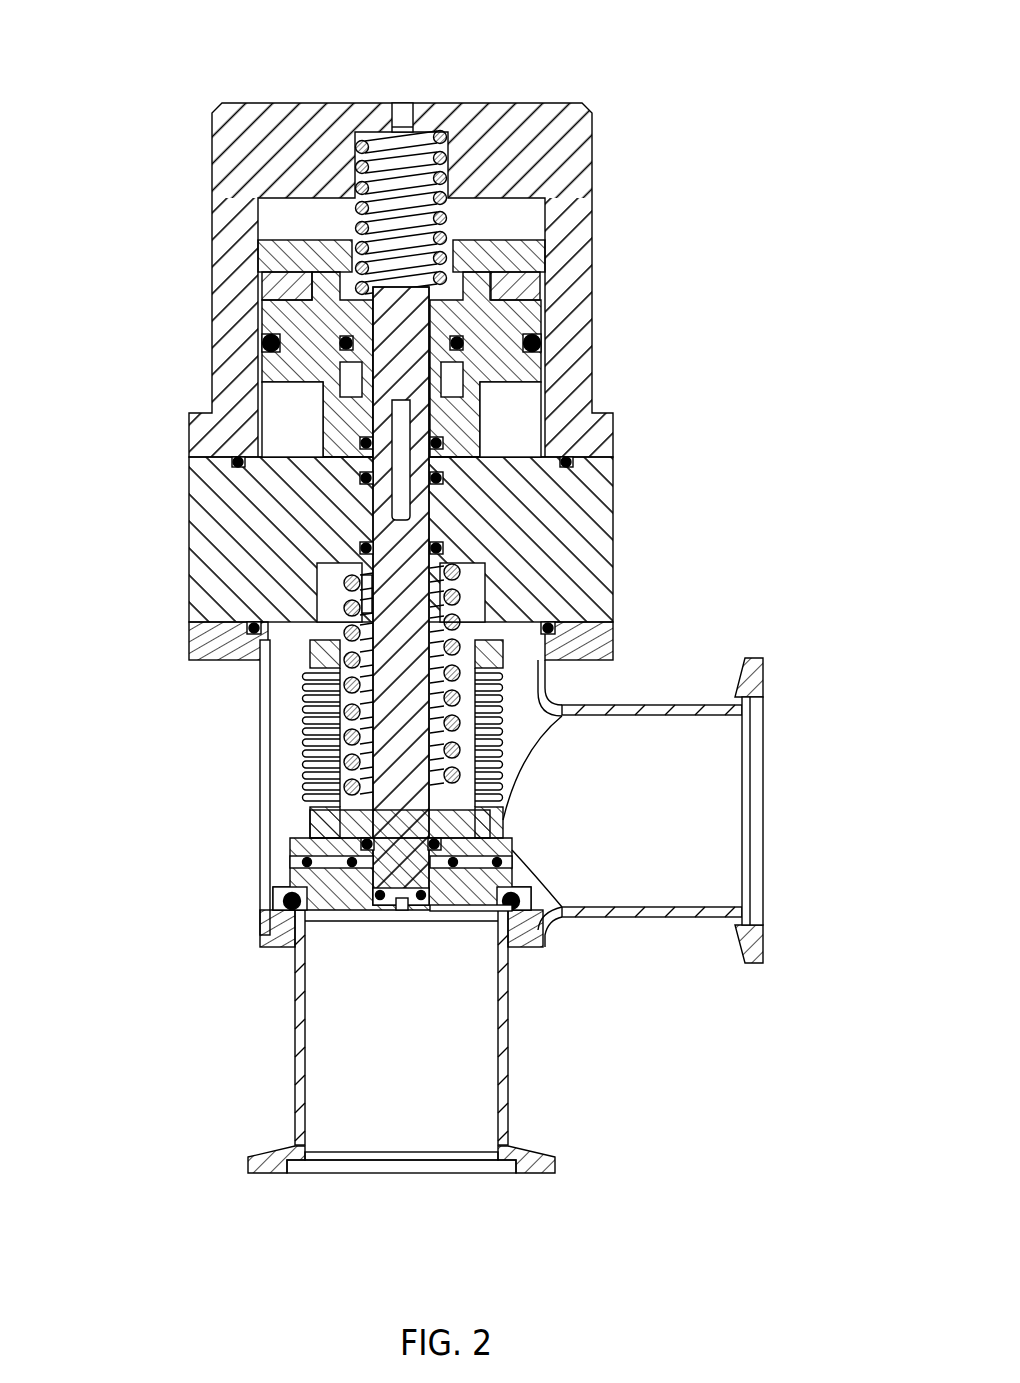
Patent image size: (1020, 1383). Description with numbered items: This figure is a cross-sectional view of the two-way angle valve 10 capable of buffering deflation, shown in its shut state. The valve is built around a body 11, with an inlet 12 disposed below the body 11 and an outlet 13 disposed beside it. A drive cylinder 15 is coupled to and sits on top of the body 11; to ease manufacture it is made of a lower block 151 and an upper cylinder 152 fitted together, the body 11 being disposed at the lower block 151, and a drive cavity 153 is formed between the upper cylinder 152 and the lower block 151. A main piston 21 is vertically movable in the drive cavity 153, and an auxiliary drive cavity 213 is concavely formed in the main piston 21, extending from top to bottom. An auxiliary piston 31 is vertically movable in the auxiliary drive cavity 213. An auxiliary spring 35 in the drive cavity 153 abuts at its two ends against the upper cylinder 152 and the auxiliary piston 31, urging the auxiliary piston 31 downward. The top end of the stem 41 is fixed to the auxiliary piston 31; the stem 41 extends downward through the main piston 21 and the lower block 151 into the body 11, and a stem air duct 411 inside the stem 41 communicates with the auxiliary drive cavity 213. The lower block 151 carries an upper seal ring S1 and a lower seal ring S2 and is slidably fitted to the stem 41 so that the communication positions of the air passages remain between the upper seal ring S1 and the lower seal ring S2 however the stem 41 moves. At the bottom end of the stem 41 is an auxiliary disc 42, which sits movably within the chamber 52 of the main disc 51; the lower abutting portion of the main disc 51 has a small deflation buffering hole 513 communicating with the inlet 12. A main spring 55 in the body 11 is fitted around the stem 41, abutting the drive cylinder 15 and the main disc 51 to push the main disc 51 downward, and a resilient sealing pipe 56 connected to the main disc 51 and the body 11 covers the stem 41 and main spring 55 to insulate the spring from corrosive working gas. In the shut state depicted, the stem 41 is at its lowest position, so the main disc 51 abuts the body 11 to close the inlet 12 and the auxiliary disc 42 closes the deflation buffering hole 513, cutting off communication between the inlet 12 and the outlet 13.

The two-way angle valve 10 is at (740, 140).
The body 11 is at (252, 782).
The inlet 12 is at (425, 1175).
The outlet 13 is at (763, 812).
The drive cylinder 15 is at (778, 366).
The lower block 151 is at (613, 490).
The upper cylinder 152 is at (592, 366).
The drive cavity 153 is at (275, 395).
The main piston 21 is at (265, 320).
The auxiliary drive cavity 213 is at (350, 392).
The auxiliary piston 31 is at (468, 338).
The auxiliary spring 35 is at (365, 213).
The stem 41 is at (425, 517).
The stem air duct 411 is at (400, 500).
The auxiliary disc 42 is at (402, 912).
The main disc 51 is at (293, 870).
The deflation buffering hole 513 is at (432, 912).
The chamber 52 is at (363, 868).
The main spring 55 is at (350, 650).
The resilient sealing pipe 56 is at (303, 738).
The upper seal ring S1 is at (360, 478).
The lower seal ring S2 is at (360, 548).